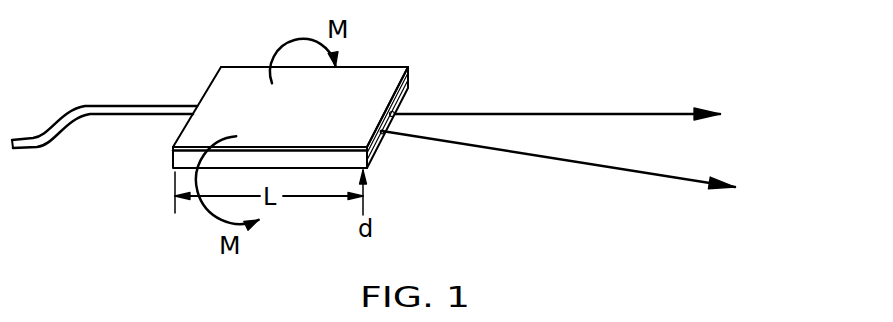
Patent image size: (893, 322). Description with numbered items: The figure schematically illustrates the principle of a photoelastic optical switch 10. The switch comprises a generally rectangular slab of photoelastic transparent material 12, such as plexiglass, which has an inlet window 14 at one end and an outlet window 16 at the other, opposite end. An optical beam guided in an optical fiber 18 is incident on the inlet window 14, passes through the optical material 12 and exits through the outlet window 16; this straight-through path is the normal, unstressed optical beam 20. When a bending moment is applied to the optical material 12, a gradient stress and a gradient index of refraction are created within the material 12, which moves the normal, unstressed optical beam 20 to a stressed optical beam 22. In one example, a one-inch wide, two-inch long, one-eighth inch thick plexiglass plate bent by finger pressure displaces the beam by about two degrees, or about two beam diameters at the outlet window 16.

The optical switch 10 is at (232, 91).
The photoelastic transparent material 12 is at (328, 98).
The inlet window 14 is at (174, 130).
The outlet window 16 is at (375, 148).
The optical fiber 18 is at (63, 113).
The normal, unstressed optical beam 20 is at (446, 112).
The stressed optical beam 22 is at (533, 155).